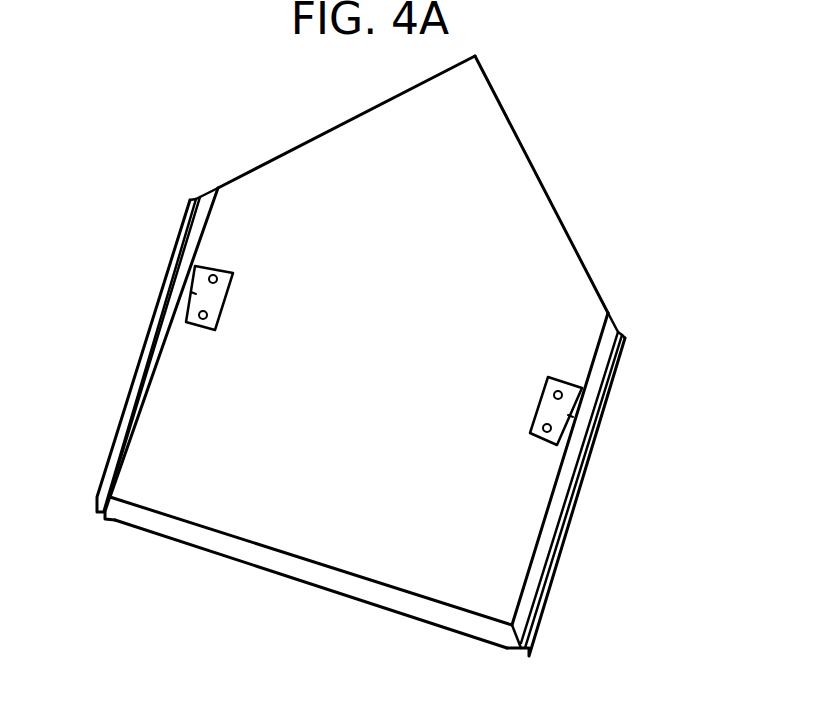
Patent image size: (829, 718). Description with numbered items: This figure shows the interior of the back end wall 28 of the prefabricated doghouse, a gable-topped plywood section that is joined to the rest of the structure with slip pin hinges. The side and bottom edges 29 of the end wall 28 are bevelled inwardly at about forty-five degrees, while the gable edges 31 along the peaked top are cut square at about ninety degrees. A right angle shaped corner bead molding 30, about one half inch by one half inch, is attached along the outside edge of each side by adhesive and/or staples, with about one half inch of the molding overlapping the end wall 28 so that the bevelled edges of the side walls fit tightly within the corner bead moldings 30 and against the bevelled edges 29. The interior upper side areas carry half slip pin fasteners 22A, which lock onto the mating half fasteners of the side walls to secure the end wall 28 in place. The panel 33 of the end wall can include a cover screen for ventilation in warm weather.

The female slip pin fastener 22A is at (194, 270).
The end wall 28 is at (272, 157).
The side and bottom edges 29 is at (143, 417).
The corner bead molding 30 is at (138, 367).
The gable edges 31 is at (530, 158).
The panel 33 is at (527, 518).